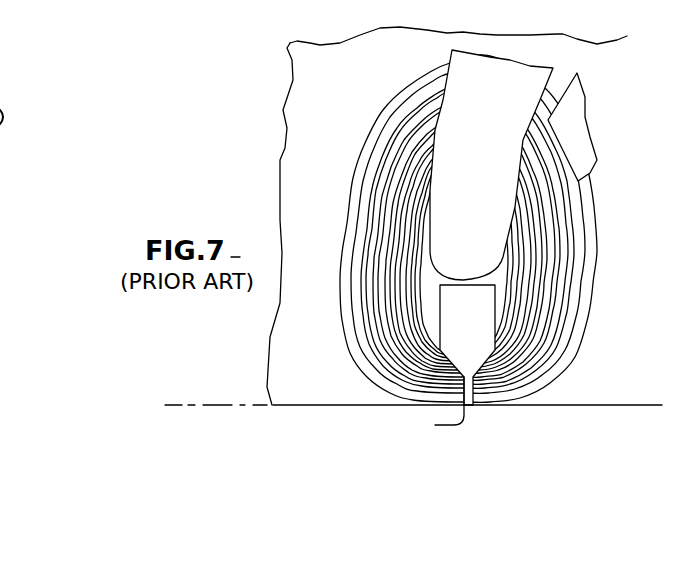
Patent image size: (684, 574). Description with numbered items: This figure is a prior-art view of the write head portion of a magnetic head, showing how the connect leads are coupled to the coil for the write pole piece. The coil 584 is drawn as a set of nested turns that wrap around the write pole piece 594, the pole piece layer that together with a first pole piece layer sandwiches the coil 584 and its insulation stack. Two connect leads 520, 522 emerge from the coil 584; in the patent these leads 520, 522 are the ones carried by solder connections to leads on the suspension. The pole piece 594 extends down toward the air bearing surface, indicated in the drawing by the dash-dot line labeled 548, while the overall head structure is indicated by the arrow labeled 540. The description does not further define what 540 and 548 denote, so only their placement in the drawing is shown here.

The connect lead 520 is at (486, 158).
The connect lead 522 is at (585, 118).
The write head 540 is at (609, 215).
The air bearing surface (ABS) 548 is at (217, 405).
The coil layer 584 is at (568, 305).
The second pole piece layer 594 is at (481, 337).